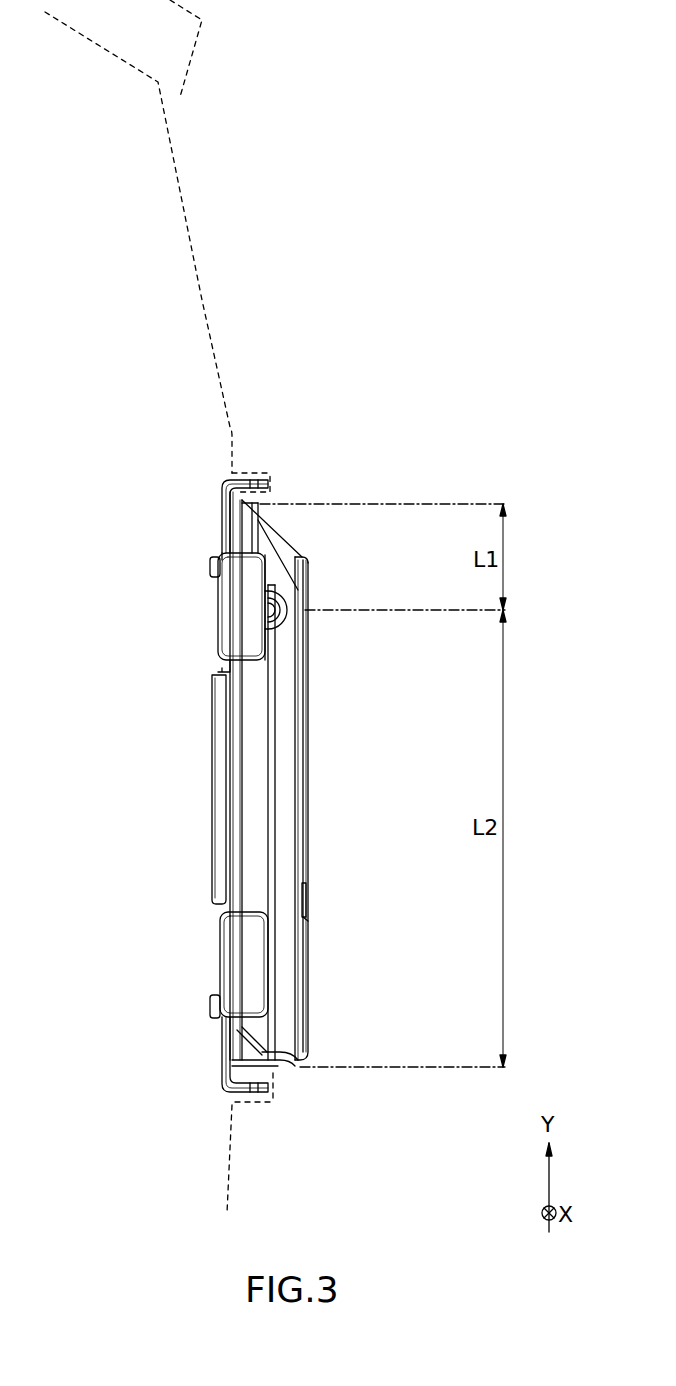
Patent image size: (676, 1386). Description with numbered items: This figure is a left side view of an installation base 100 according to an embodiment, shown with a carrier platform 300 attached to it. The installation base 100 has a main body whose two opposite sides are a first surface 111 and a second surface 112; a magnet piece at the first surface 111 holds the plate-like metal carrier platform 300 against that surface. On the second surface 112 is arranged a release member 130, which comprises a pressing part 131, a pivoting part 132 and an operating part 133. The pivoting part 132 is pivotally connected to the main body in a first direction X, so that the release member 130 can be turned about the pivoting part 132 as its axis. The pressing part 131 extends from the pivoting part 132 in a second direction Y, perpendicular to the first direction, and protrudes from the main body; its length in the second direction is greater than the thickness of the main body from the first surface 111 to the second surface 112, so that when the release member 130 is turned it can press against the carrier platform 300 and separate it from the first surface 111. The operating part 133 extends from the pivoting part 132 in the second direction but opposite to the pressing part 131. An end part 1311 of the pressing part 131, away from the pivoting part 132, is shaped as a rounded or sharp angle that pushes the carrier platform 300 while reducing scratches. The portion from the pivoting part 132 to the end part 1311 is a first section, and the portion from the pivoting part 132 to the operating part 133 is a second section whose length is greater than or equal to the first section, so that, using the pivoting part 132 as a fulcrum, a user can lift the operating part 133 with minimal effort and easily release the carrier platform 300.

The installation base 100 is at (70, 390).
The first surface 111 is at (220, 665).
The second surface 112 is at (275, 668).
The release member 130 is at (285, 864).
The pressing part 131 is at (250, 543).
The end part 1311 is at (232, 485).
The pivoting part 132 is at (282, 598).
The operating part 133 is at (285, 985).
The carrier platform 300 is at (222, 1048).